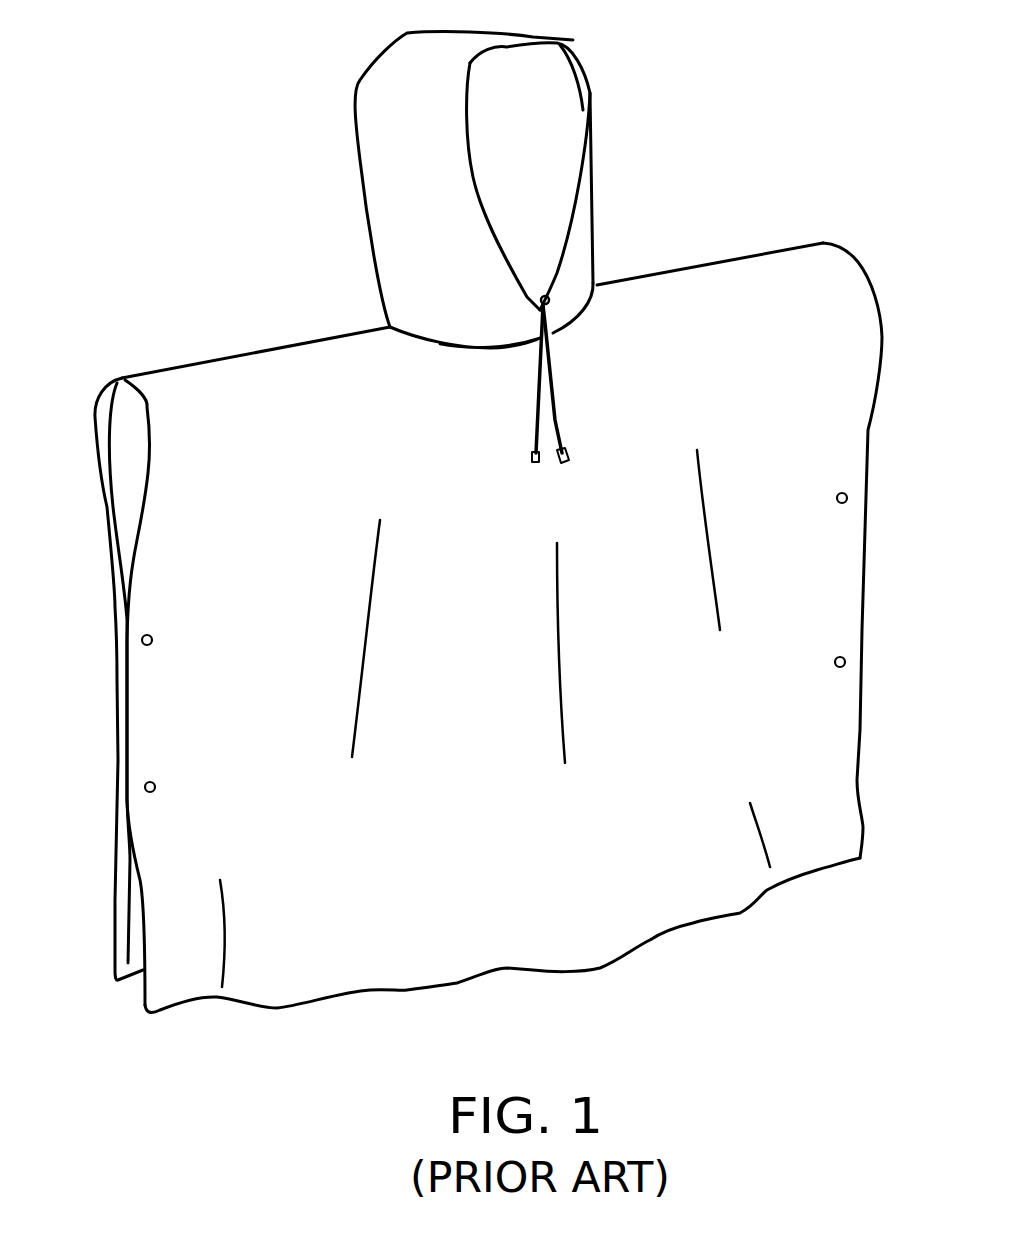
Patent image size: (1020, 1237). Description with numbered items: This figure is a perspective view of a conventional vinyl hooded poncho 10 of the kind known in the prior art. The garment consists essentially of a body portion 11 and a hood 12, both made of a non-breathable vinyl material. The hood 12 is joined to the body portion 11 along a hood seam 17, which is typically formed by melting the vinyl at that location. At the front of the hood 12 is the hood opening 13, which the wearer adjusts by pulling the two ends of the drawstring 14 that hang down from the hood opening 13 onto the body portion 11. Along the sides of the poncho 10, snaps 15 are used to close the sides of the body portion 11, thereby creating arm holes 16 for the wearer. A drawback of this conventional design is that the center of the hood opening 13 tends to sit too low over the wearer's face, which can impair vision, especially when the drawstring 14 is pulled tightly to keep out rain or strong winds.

The hooded poncho 10 is at (775, 217).
The body portion 11 is at (658, 646).
The hood 12 is at (443, 191).
The hood opening 13 is at (537, 155).
The drawstring 14 is at (553, 418).
The snaps 15 is at (152, 638).
The arm holes 16 is at (130, 447).
The hood seam 17 is at (468, 350).